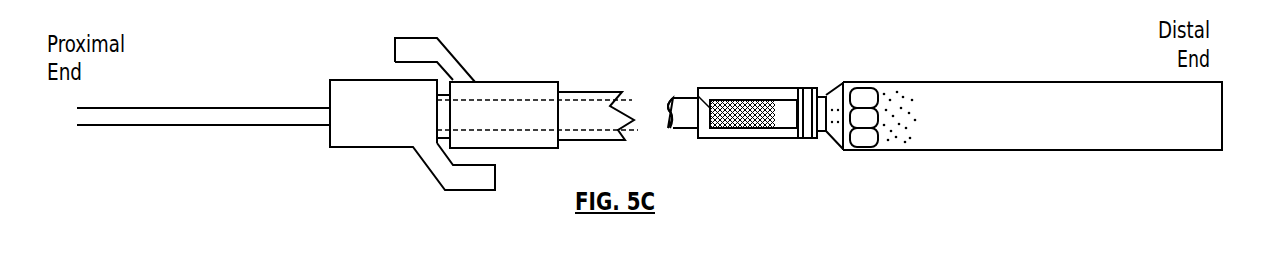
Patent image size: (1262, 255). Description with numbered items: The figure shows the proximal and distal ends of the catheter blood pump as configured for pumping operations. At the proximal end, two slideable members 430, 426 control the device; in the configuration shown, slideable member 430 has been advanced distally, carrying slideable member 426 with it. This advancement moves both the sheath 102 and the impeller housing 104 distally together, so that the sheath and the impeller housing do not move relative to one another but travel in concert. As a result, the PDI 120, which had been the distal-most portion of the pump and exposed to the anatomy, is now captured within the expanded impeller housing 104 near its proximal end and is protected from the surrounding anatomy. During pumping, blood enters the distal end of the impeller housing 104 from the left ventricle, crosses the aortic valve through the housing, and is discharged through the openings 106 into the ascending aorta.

The slideable member 430 is at (397, 128).
The slideable member 426 is at (524, 128).
The sheath 102 is at (737, 88).
The impeller housing 104 is at (988, 82).
The openings 106 is at (870, 83).
The PDI 120 is at (907, 130).